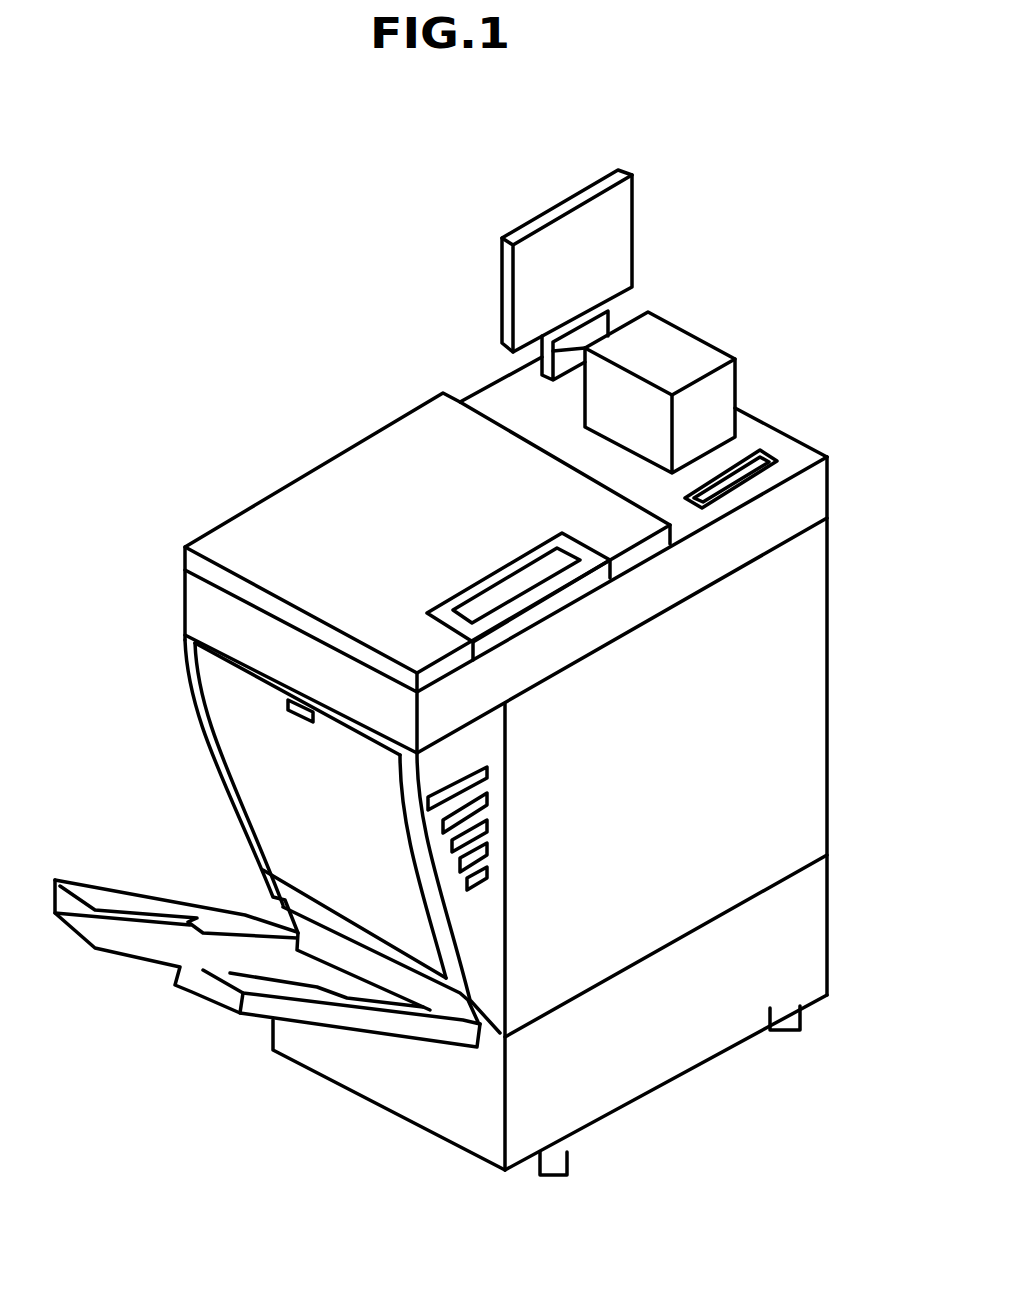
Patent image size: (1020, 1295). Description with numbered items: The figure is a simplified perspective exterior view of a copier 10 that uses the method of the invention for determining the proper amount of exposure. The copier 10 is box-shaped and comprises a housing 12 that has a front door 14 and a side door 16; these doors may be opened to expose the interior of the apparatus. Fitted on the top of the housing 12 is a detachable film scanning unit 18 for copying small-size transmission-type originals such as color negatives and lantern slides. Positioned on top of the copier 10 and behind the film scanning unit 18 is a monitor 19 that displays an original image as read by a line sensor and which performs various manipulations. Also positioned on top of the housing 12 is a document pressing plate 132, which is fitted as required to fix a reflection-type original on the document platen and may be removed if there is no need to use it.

The copier 10 is at (310, 332).
The housing 12 is at (829, 636).
The front door 14 is at (773, 757).
The side door 16 is at (250, 773).
The film scanning unit 18 is at (675, 345).
The monitor 19 is at (616, 226).
The document pressing plate 132 is at (318, 497).